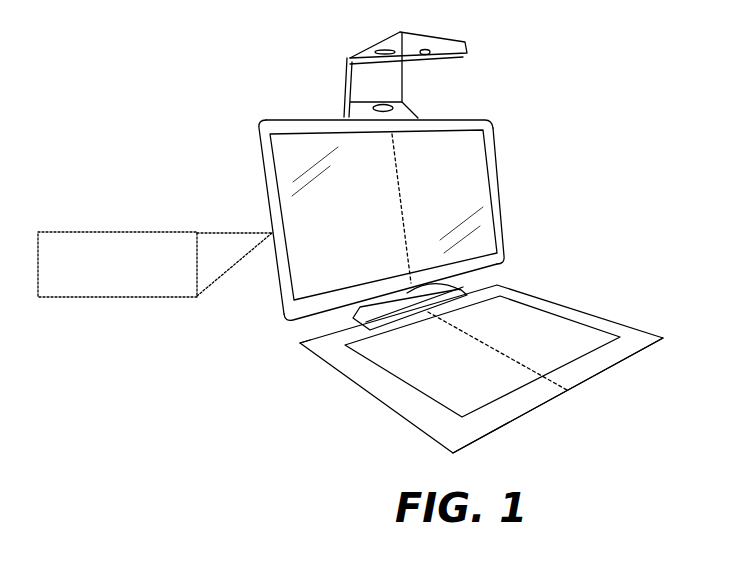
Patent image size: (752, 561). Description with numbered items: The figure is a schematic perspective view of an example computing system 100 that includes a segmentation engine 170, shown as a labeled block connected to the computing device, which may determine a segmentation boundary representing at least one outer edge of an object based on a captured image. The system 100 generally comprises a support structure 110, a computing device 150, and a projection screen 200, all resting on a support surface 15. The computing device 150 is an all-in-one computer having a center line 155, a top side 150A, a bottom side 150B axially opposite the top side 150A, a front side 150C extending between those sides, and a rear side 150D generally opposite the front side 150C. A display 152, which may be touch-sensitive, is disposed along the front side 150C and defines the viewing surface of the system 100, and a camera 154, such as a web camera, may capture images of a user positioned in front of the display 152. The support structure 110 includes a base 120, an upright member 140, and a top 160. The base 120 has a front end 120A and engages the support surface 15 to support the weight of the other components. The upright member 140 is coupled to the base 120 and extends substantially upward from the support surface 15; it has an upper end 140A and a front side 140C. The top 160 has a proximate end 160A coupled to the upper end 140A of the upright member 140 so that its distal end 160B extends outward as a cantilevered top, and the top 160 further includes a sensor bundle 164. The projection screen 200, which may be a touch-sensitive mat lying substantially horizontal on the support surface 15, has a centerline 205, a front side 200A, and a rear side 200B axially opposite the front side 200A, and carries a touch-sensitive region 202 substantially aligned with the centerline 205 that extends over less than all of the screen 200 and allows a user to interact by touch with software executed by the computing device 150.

The computing system 100 is at (577, 75).
The support structure 110 is at (249, 97).
The base 120 is at (362, 326).
The front end of base 120A is at (405, 320).
The upright member 140 is at (331, 70).
The upper end of upright member 140A is at (346, 53).
The front side of upright member 140C is at (405, 81).
The computing device 150 is at (385, 205).
The top side of computing device 150A is at (462, 118).
The bottom side of computing device 150B is at (483, 270).
The front side of computing device 150C is at (486, 217).
The rear side of computing device 150D is at (256, 191).
The display 152 is at (326, 200).
The camera 154 is at (392, 128).
The center line of computing device 155 is at (405, 203).
The top 160 is at (398, 56).
The proximate end of top 160A is at (321, 67).
The distal end of top 160B is at (470, 39).
The sensor bundle 164 is at (455, 58).
The segmentation engine 170 is at (118, 298).
The projection screen 200 is at (466, 370).
The front side of projection screen 200A is at (500, 431).
The rear side of projection screen 200B is at (303, 340).
The touch-sensitive region 202 is at (565, 349).
The centerline of projection screen 205 is at (480, 342).
The support surface 15 is at (357, 455).